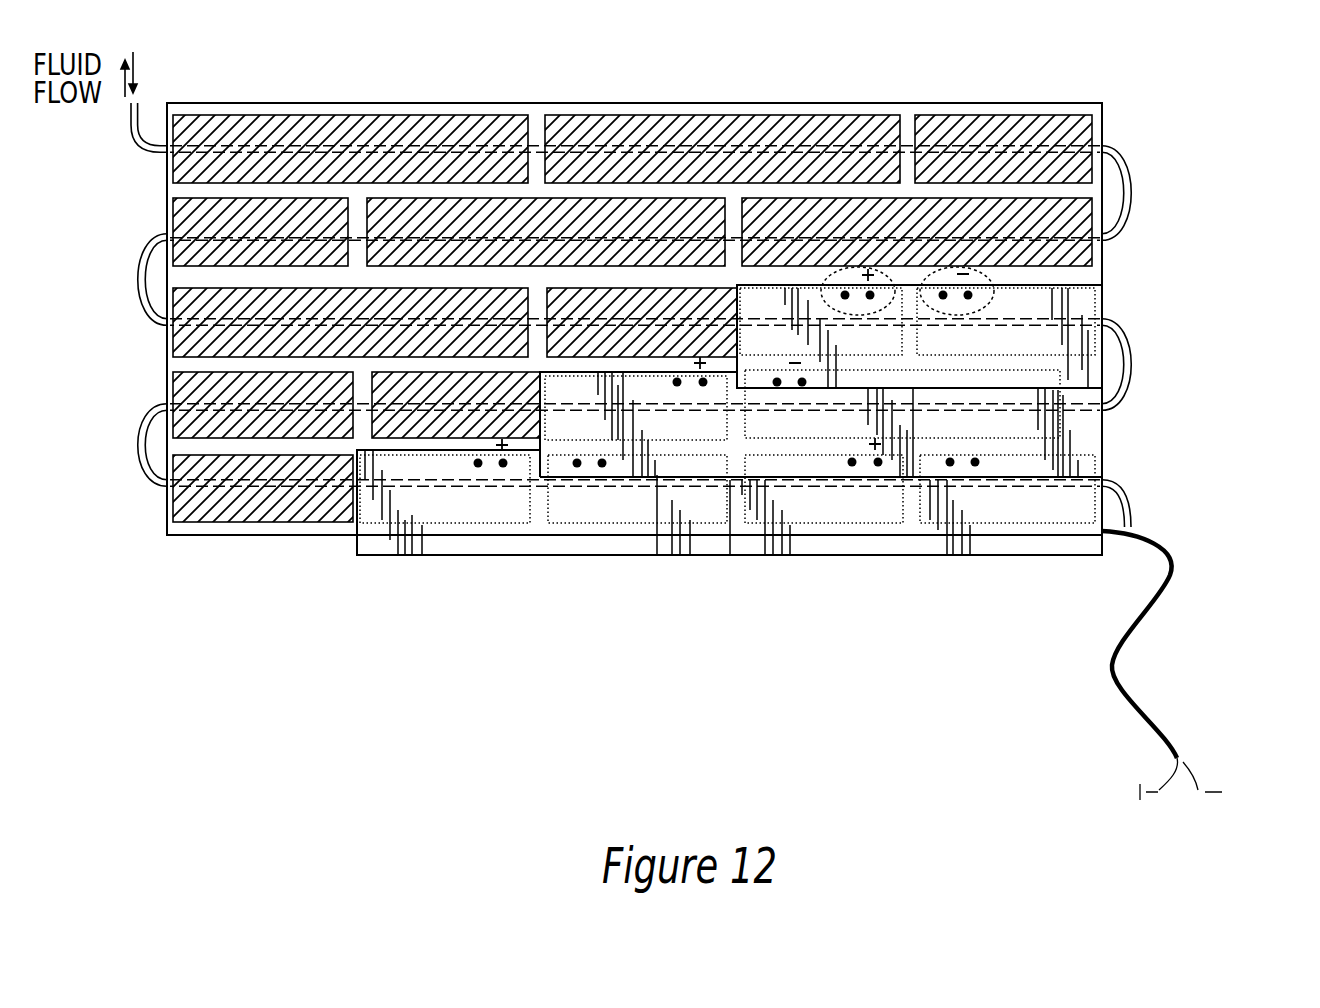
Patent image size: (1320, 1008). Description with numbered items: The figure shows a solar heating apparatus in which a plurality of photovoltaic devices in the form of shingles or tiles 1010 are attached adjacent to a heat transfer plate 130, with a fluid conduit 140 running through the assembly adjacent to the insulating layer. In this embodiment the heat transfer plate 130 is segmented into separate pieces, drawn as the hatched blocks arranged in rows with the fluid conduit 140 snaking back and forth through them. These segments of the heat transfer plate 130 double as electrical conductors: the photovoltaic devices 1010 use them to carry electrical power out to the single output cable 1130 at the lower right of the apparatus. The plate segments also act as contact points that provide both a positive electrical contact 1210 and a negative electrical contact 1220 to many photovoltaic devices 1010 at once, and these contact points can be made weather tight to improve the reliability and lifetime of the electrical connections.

The heat transfer plate 130 is at (257, 496).
The fluid conduit 140 is at (139, 457).
The photovoltaic devices 1010 is at (833, 477).
The positive electrical contact 1210 is at (882, 314).
The negative electrical contact 1220 is at (994, 300).
The output cable 1130 is at (1145, 620).